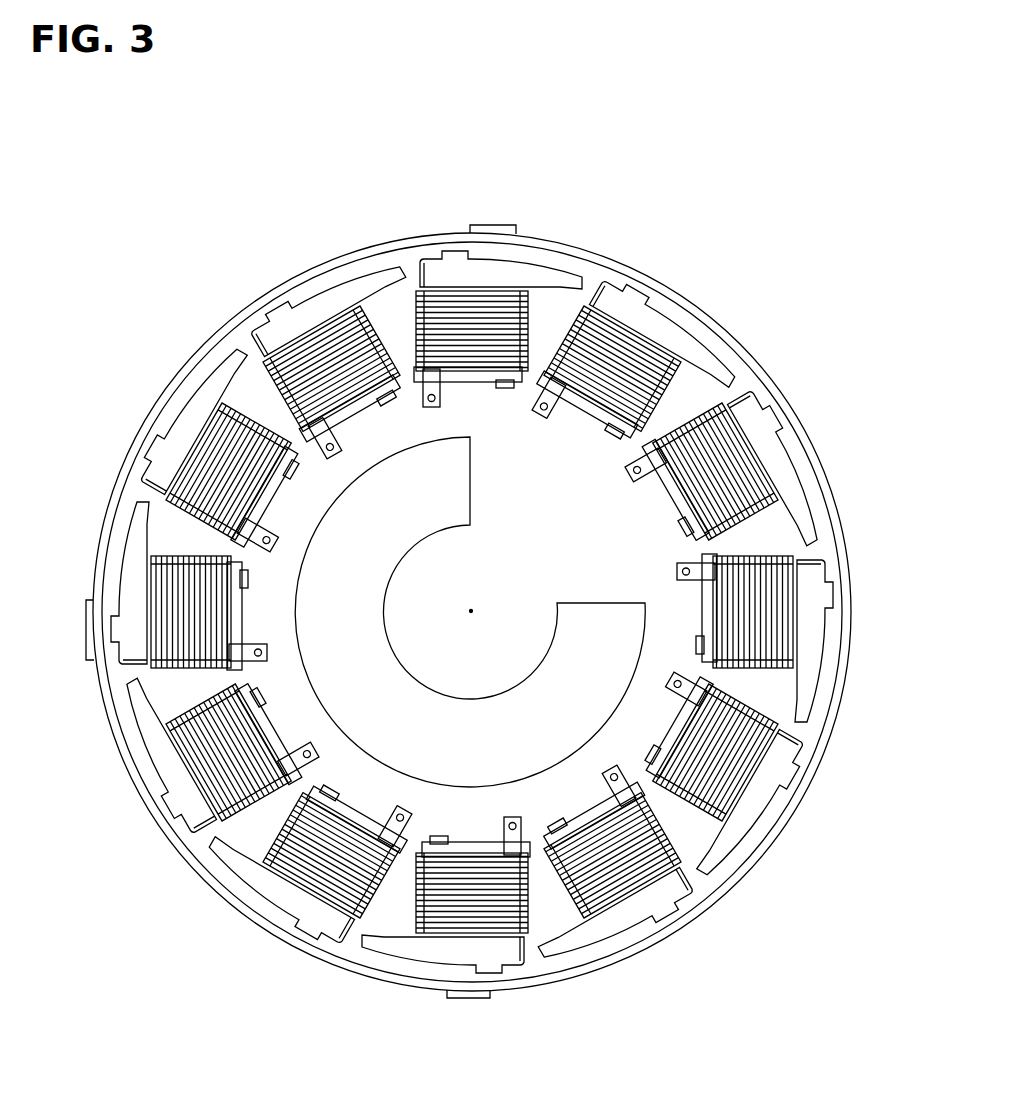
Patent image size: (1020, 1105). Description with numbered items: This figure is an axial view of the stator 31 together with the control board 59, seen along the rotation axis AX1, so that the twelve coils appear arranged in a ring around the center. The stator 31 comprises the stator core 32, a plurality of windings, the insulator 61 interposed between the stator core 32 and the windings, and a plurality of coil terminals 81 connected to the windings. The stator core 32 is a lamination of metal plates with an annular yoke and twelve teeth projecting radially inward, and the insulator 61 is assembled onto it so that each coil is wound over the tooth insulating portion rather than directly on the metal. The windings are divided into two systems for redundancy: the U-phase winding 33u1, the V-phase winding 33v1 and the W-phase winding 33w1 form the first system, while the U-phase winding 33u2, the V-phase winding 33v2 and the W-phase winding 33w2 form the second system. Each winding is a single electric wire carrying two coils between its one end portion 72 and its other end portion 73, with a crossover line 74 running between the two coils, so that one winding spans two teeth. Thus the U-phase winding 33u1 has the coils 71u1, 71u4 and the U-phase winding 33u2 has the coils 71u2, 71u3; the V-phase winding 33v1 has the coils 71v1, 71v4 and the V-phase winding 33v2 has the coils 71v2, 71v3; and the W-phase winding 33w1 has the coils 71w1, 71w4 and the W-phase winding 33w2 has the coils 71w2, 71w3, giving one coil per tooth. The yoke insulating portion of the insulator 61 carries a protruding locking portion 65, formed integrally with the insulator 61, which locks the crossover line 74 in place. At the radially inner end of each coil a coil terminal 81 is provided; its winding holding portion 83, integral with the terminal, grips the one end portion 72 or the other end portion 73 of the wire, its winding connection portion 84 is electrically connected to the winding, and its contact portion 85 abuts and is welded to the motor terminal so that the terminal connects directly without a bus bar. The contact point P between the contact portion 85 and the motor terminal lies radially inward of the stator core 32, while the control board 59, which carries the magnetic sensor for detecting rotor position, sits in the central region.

The stator 31 is at (256, 290).
The stator core 32 is at (212, 342).
The insulator 61 is at (638, 300).
The locking portion 65 is at (453, 252).
The crossover line 74 is at (577, 289).
The contact portion 85 is at (413, 277).
The control board 59 is at (453, 488).
The central axis AX1 is at (473, 609).
The contact point P is at (431, 410).
The coil 71u1 is at (472, 327).
The coil 71v1 is at (614, 365).
The coil 71w1 is at (719, 470).
The coil 71u4 is at (757, 612).
The coil 71v4 is at (719, 754).
The coil 71w4 is at (614, 859).
The coil 71u2 is at (472, 897).
The coil 71v2 is at (330, 859).
The coil 71w2 is at (225, 754).
The coil 71u3 is at (187, 612).
The coil 71v3 is at (225, 470).
The coil 71w3 is at (330, 365).
The one end portion 72 is at (772, 637).
The other end portion 73 is at (497, 364).
The coil terminal 81 is at (432, 394).
The winding holding portion 83 is at (406, 270).
The winding connection portion 84 is at (520, 294).
The U-phase winding 33u1 is at (452, 374).
The V-phase winding 33v1 is at (574, 396).
The W-phase winding 33w1 is at (668, 476).
The U-phase winding 33u2 is at (492, 850).
The V-phase winding 33v2 is at (370, 828).
The W-phase winding 33w2 is at (276, 748).